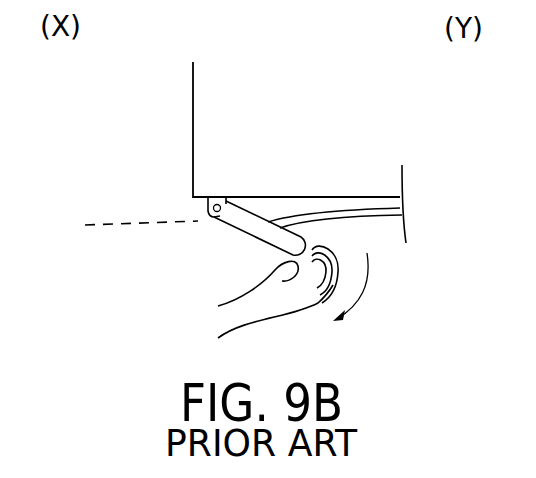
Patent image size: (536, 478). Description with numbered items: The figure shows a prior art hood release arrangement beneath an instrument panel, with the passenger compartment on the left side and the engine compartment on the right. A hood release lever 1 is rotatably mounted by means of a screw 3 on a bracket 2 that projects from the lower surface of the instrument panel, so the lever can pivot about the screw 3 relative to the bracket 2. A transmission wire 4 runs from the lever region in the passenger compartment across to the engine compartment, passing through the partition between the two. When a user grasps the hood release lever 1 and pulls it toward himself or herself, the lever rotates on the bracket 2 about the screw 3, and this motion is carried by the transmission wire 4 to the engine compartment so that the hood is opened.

The hood release lever 1 is at (215, 125).
The bracket 2 is at (216, 203).
The screw 3 is at (129, 229).
The transmission wire 4 is at (383, 218).